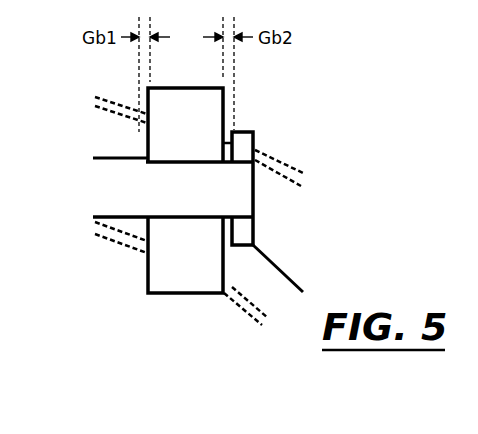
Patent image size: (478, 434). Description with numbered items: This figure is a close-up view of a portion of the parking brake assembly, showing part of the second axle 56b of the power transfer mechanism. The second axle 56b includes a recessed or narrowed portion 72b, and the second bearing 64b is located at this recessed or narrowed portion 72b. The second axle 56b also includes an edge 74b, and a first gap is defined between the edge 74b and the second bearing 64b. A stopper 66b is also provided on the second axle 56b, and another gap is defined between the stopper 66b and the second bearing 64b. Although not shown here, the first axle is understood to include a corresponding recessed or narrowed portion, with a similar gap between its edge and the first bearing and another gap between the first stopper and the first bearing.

The second axle 56b is at (137, 185).
The second bearing 64b is at (168, 280).
The stopper 66b is at (237, 140).
The recessed or narrowed portion 72b is at (193, 160).
The edge 74b is at (155, 152).